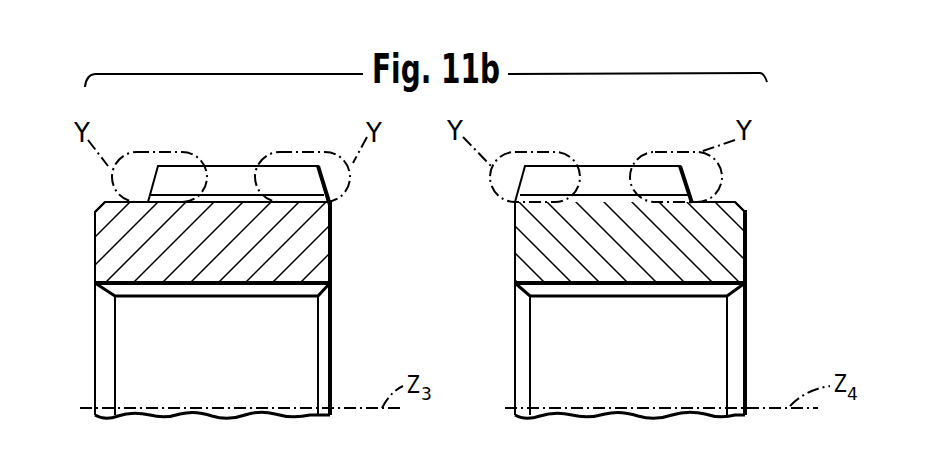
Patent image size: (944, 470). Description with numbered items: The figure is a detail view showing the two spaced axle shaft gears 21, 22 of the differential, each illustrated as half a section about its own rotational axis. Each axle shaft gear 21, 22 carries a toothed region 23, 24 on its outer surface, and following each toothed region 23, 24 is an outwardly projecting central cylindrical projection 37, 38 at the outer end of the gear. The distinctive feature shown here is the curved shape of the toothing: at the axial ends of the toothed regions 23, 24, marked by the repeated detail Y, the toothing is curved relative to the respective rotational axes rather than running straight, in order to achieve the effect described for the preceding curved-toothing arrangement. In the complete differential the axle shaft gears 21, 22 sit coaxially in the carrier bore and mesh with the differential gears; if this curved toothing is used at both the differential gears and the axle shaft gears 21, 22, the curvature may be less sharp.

The axle shaft gear 21 is at (240, 217).
The axle shaft gear 22 is at (590, 227).
The toothed region 23 is at (217, 172).
The toothed region 24 is at (615, 183).
The central cylindrical projection 37 is at (110, 202).
The central cylindrical projection 38 is at (735, 202).